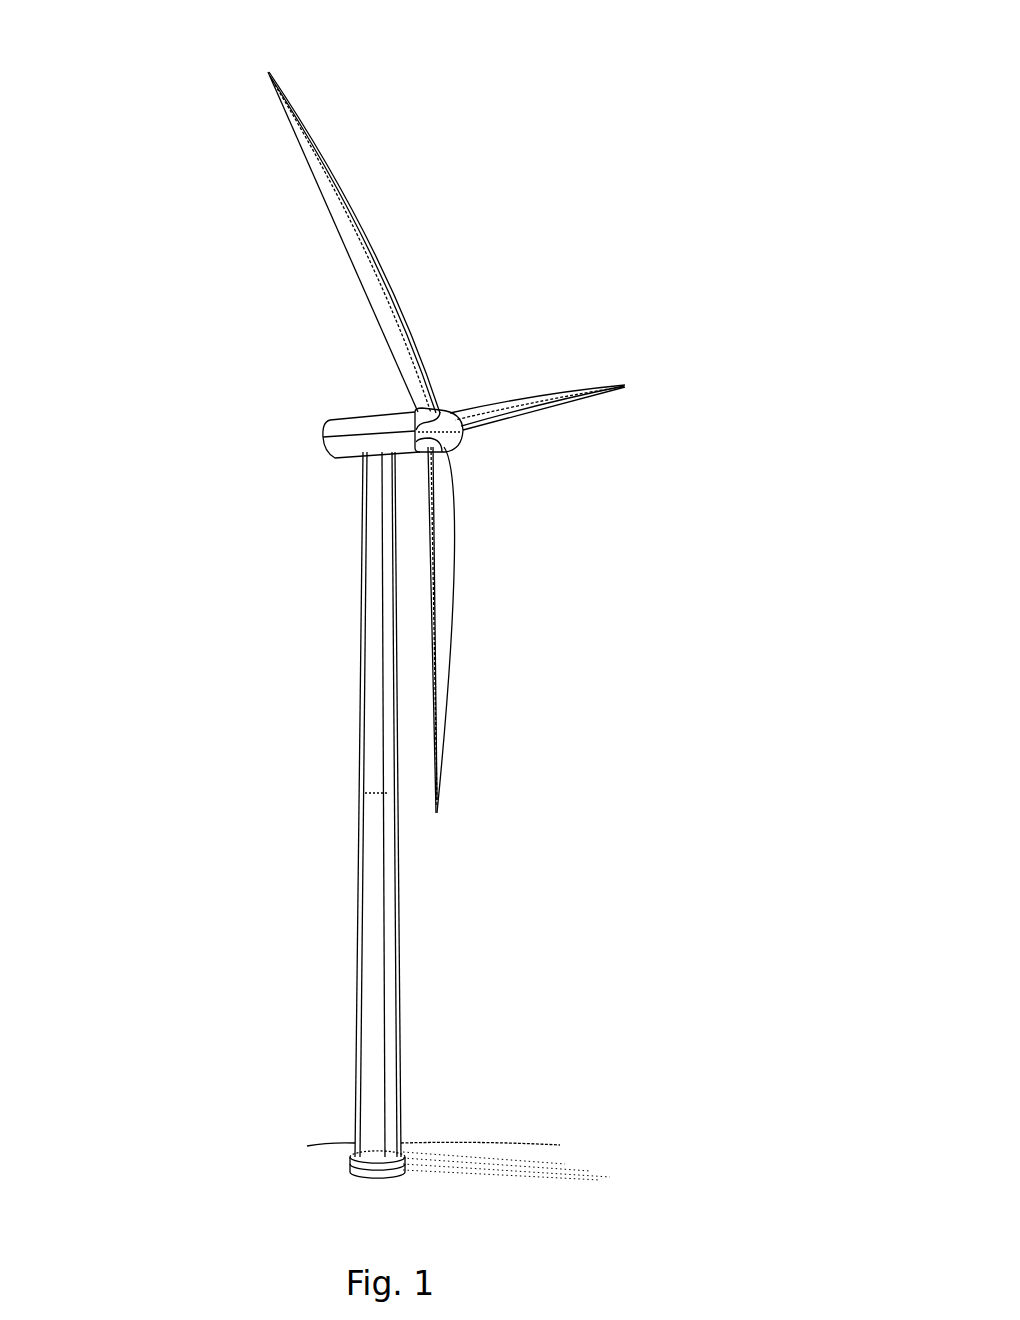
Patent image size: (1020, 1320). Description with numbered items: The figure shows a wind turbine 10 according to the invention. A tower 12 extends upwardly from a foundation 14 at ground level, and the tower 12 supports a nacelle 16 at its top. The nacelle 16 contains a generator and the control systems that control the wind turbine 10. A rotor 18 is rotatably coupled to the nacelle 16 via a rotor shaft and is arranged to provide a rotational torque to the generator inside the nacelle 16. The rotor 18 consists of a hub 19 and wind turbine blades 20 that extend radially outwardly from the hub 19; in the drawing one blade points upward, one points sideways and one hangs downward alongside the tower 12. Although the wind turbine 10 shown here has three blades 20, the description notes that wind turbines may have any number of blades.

The wind turbine 10 is at (577, 63).
The tower 12 is at (403, 1047).
The foundation 14 is at (352, 1160).
The nacelle 16 is at (330, 434).
The rotor 18 is at (449, 406).
The hub 19 is at (462, 430).
The wind turbine blades 20 is at (338, 232).